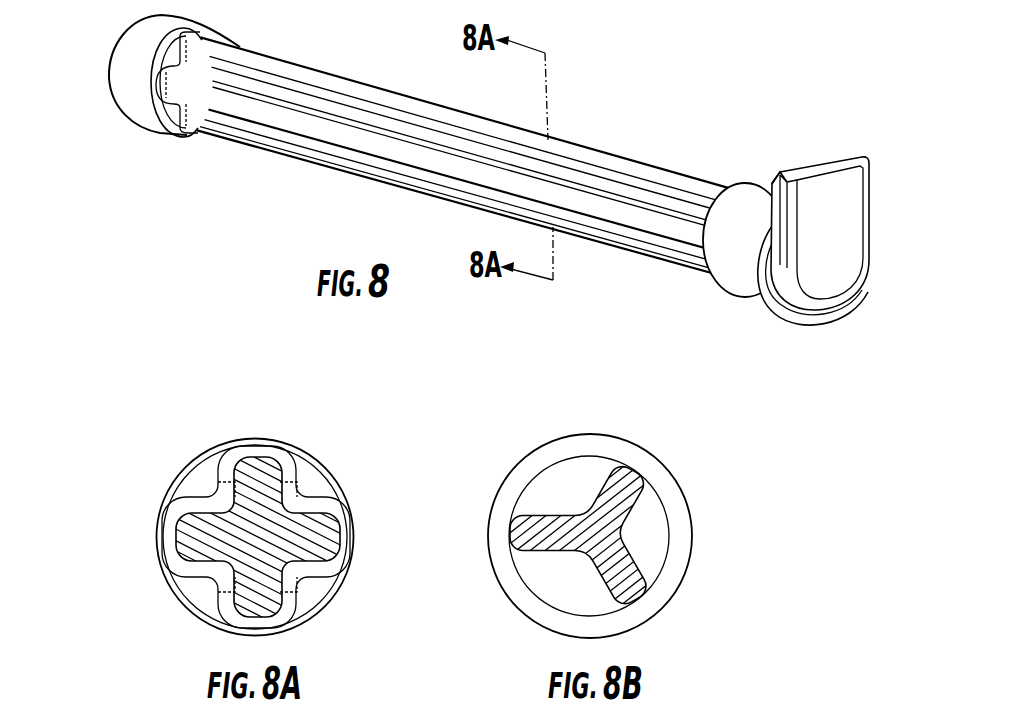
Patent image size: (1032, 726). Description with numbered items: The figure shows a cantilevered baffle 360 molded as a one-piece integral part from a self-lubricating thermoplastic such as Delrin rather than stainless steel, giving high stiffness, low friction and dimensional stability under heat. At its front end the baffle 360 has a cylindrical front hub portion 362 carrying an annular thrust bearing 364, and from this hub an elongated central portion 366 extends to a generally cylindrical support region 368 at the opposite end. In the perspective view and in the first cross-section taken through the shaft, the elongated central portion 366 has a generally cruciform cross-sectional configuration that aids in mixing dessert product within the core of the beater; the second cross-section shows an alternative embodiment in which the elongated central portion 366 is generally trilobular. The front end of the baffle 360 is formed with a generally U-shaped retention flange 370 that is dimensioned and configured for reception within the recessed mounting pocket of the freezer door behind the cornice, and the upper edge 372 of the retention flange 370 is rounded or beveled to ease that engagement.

In FIG. 8, the cantilevered baffle 360 is at (275, 185).
In FIG. 8A, the cantilevered baffle 360 is at (124, 467).
In FIG. 8B, the cantilevered baffle 360 is at (504, 436).
In FIG. 8, the cylindrical front hub portion 362 is at (723, 290).
In FIG. 8, the annular thrust bearing 364 is at (771, 310).
In FIG. 8, the elongated central portion 366 is at (430, 105).
In FIG. 8A, the elongated central portion 366 is at (257, 454).
In FIG. 8B, the elongated central portion 366 is at (630, 466).
In FIG. 8, the generally cylindrical support region 368 is at (157, 125).
In FIG. 8A, the generally cylindrical support region 368 is at (180, 600).
In FIG. 8B, the generally cylindrical support region 368 is at (510, 595).
In FIG. 8, the retention flange 370 is at (870, 235).
In FIG. 8, the upper edge 372 is at (779, 175).